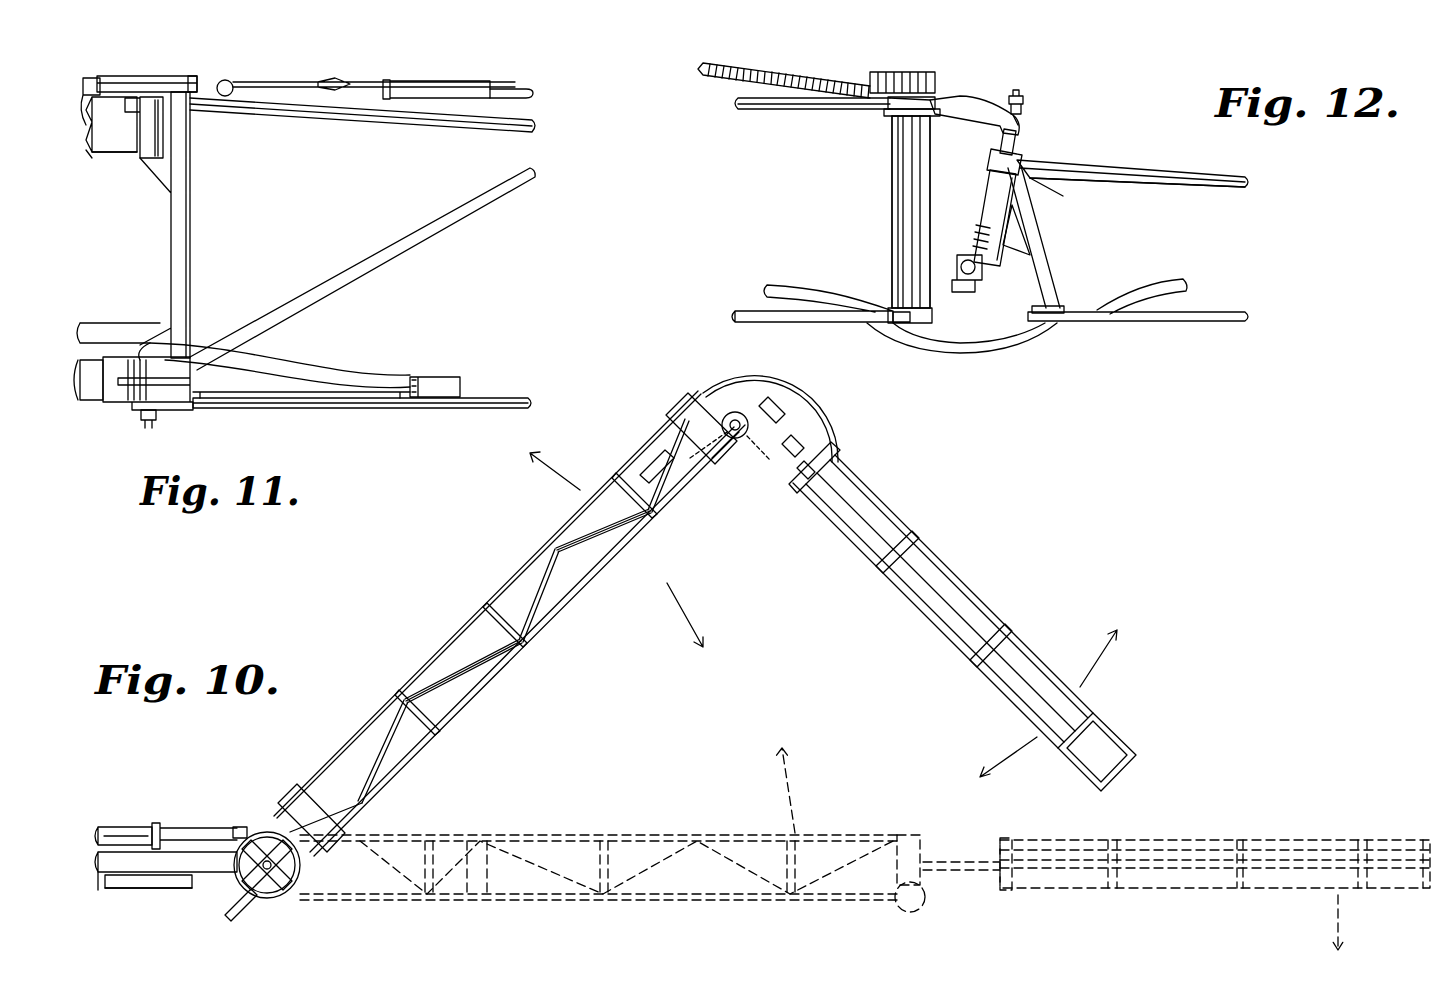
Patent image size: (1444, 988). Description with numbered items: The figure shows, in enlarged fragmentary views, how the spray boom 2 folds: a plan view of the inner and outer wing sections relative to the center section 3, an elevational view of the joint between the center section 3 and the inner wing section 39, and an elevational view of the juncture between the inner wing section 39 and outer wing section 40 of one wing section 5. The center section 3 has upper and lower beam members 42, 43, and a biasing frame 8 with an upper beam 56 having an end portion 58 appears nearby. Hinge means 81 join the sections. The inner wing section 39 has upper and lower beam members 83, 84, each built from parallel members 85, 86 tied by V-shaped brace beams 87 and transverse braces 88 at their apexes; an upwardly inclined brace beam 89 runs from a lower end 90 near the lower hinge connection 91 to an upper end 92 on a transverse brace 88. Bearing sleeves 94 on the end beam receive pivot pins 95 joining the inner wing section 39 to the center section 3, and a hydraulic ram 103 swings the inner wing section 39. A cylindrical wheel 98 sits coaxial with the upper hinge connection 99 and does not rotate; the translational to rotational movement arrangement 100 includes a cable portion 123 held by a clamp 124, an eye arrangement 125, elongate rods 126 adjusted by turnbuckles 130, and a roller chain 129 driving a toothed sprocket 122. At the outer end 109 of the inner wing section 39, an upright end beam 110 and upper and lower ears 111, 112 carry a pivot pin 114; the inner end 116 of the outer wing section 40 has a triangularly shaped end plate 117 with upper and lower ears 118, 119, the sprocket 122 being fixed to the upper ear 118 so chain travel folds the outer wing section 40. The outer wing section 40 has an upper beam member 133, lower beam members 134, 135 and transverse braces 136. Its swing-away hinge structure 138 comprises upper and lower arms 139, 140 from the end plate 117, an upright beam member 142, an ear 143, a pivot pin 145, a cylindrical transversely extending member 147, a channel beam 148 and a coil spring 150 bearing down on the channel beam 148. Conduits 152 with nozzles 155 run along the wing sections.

In FIG. 11, the spray boom 2 is at (116, 153).
In FIG. 10, the spray boom 2 is at (215, 873).
In FIG. 10, the center section 3 is at (185, 836).
In FIG. 11, the wing section 5 is at (300, 410).
In FIG. 12, the wing section 5 is at (850, 326).
In FIG. 10, the wing section 5 is at (468, 702).
In FIG. 10, the biasing frame 8 is at (182, 889).
In FIG. 11, the inner wing section 39 is at (482, 410).
In FIG. 12, the inner wing section 39 is at (762, 110).
In FIG. 10, the inner wing section 39 is at (563, 612).
In FIG. 12, the outer wing section 40 is at (1180, 188).
In FIG. 10, the outer wing section 40 is at (900, 518).
In FIG. 11, the upper beam member 42 is at (95, 152).
In FIG. 10, the upper beam member 42 is at (228, 838).
In FIG. 11, the lower beam member 43 is at (97, 360).
In FIG. 10, the upper beam 56 is at (106, 890).
In FIG. 10, the end portion 58 is at (142, 889).
In FIG. 11, the hinge means 81 is at (142, 166).
In FIG. 12, the hinge means 81 is at (1020, 121).
In FIG. 10, the hinge means 81 is at (740, 452).
In FIG. 11, the upper beam member 83 is at (372, 128).
In FIG. 12, the upper beam member 83 is at (802, 110).
In FIG. 10, the upper beam member 83 is at (598, 490).
In FIG. 11, the lower beam member 84 is at (398, 410).
In FIG. 12, the lower beam member 84 is at (800, 324).
In FIG. 10, the parallel member 85 is at (557, 548).
In FIG. 10, the parallel member 86 is at (600, 578).
In FIG. 10, the brace beam 87 is at (445, 670).
In FIG. 10, the transverse brace 88 is at (500, 620).
In FIG. 11, the upwardly inclined brace beam 89 is at (420, 238).
In FIG. 10, the upwardly inclined brace beam 89 is at (385, 786).
In FIG. 11, the lower end 90 is at (205, 385).
In FIG. 11, the lower hinge connection 91 is at (176, 410).
In FIG. 10, the upper end 92 is at (410, 712).
In FIG. 11, the bearing sleeve 94 is at (160, 140).
In FIG. 11, the pivot pin 95 is at (140, 422).
In FIG. 11, the cylindrical wheel 98 is at (192, 76).
In FIG. 10, the cylindrical wheel 98 is at (657, 466).
In FIG. 11, the upper hinge connection 99 is at (160, 120).
In FIG. 10, the upper hinge connection 99 is at (252, 900).
In FIG. 11, the translational to rotational movement arrangement 100 is at (200, 78).
In FIG. 10, the translational to rotational movement arrangement 100 is at (292, 890).
In FIG. 10, the hydraulic ram 103 is at (120, 828).
In FIG. 12, the outer end 109 is at (890, 118).
In FIG. 10, the outer end 109 is at (700, 395).
In FIG. 12, the upright end beam 110 is at (893, 205).
In FIG. 12, the upper ear 111 is at (892, 145).
In FIG. 12, the lower ear 112 is at (892, 282).
In FIG. 12, the pivot pin 114 is at (898, 180).
In FIG. 12, the inner end 116 is at (980, 98).
In FIG. 10, the inner end 116 is at (785, 450).
In FIG. 12, the triangularly shaped end plate 117 is at (930, 176).
In FIG. 10, the triangularly shaped end plate 117 is at (785, 414).
In FIG. 12, the upper ear 118 is at (935, 103).
In FIG. 12, the lower ear 119 is at (933, 313).
In FIG. 10, the toothed sprocket 122 is at (735, 412).
In FIG. 11, the cable portion 123 is at (100, 80).
In FIG. 10, the cable portion 123 is at (290, 800).
In FIG. 11, the clamp 124 is at (111, 124).
In FIG. 11, the eye arrangement 125 is at (336, 80).
In FIG. 11, the elongate rod 126 is at (528, 89).
In FIG. 12, the elongate rod 126 is at (830, 76).
In FIG. 12, the roller chain 129 is at (895, 72).
In FIG. 10, the roller chain 129 is at (715, 452).
In FIG. 11, the turnbuckle 130 is at (440, 81).
In FIG. 12, the upper beam member 133 is at (1212, 190).
In FIG. 10, the upper beam member 133 is at (963, 603).
In FIG. 12, the lower beam member 134 is at (1196, 322).
In FIG. 10, the lower beam member 134 is at (918, 605).
In FIG. 10, the lower beam member 135 is at (1020, 634).
In FIG. 10, the transverse brace 136 is at (920, 538).
In FIG. 12, the swing-away hinge structure 138 is at (1030, 228).
In FIG. 12, the upper arm 139 is at (1020, 96).
In FIG. 10, the upper arm 139 is at (822, 435).
In FIG. 12, the lower arm 140 is at (1040, 313).
In FIG. 12, the upright beam member 142 is at (1040, 182).
In FIG. 12, the ear 143 is at (1022, 160).
In FIG. 12, the pivot pin 145 is at (1000, 138).
In FIG. 10, the pivot pin 145 is at (800, 472).
In FIG. 12, the cylindrical transversely extending member 147 is at (984, 278).
In FIG. 12, the channel beam 148 is at (972, 250).
In FIG. 12, the coil spring 150 is at (985, 218).
In FIG. 10, the conduit 152 is at (790, 385).
In FIG. 11, the nozzle 155 is at (450, 378).